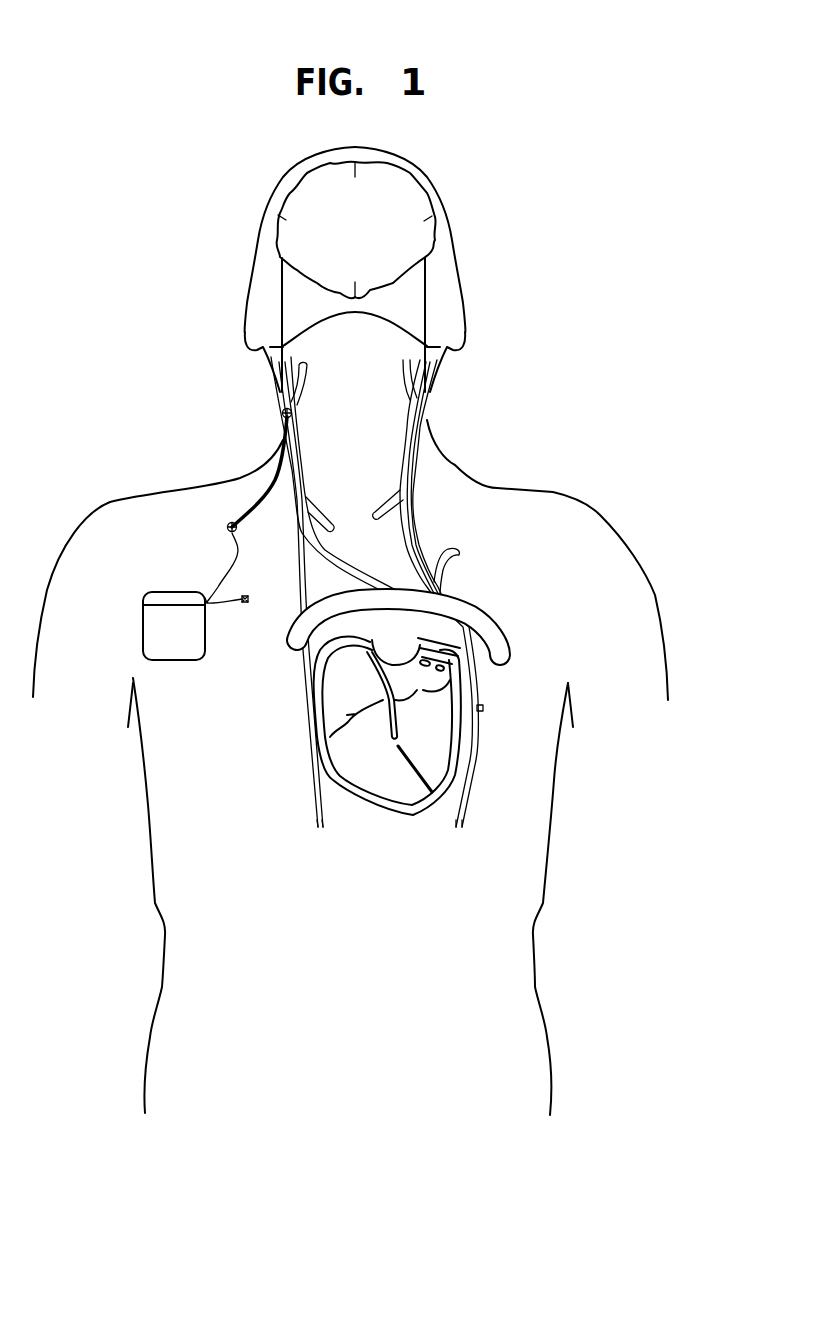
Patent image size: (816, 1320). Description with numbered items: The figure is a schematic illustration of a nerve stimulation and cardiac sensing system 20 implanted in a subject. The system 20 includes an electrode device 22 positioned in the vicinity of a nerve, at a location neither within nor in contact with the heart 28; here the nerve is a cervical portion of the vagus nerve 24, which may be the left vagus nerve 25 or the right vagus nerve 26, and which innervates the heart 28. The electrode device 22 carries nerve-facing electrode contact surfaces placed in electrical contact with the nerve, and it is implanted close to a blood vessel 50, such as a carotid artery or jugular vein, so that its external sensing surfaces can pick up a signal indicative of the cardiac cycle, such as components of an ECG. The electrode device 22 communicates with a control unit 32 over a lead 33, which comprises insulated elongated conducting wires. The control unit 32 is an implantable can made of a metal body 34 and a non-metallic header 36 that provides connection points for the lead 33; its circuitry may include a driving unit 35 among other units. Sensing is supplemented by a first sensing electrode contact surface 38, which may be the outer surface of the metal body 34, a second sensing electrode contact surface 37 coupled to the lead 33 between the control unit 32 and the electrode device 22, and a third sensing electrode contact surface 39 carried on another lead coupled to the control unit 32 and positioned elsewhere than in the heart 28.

The nerve stimulation and cardiac sensing system 20 is at (181, 525).
The electrode device 22 is at (283, 413).
The vagus nerve 24 is at (443, 821).
The left vagus nerve 25 is at (412, 485).
The right vagus nerve 26 is at (292, 547).
The heart 28 is at (472, 711).
The control unit 32 is at (147, 610).
The lead 33 is at (247, 507).
The metal body 34 is at (193, 650).
The driving unit 35 is at (413, 210).
The non-metallic header 36 is at (155, 595).
The second sensing electrode contact surface 37 is at (236, 556).
The first sensing electrode contact surface 38 is at (205, 620).
The third sensing electrode contact surface 39 is at (250, 599).
The blood vessel 50 is at (407, 417).